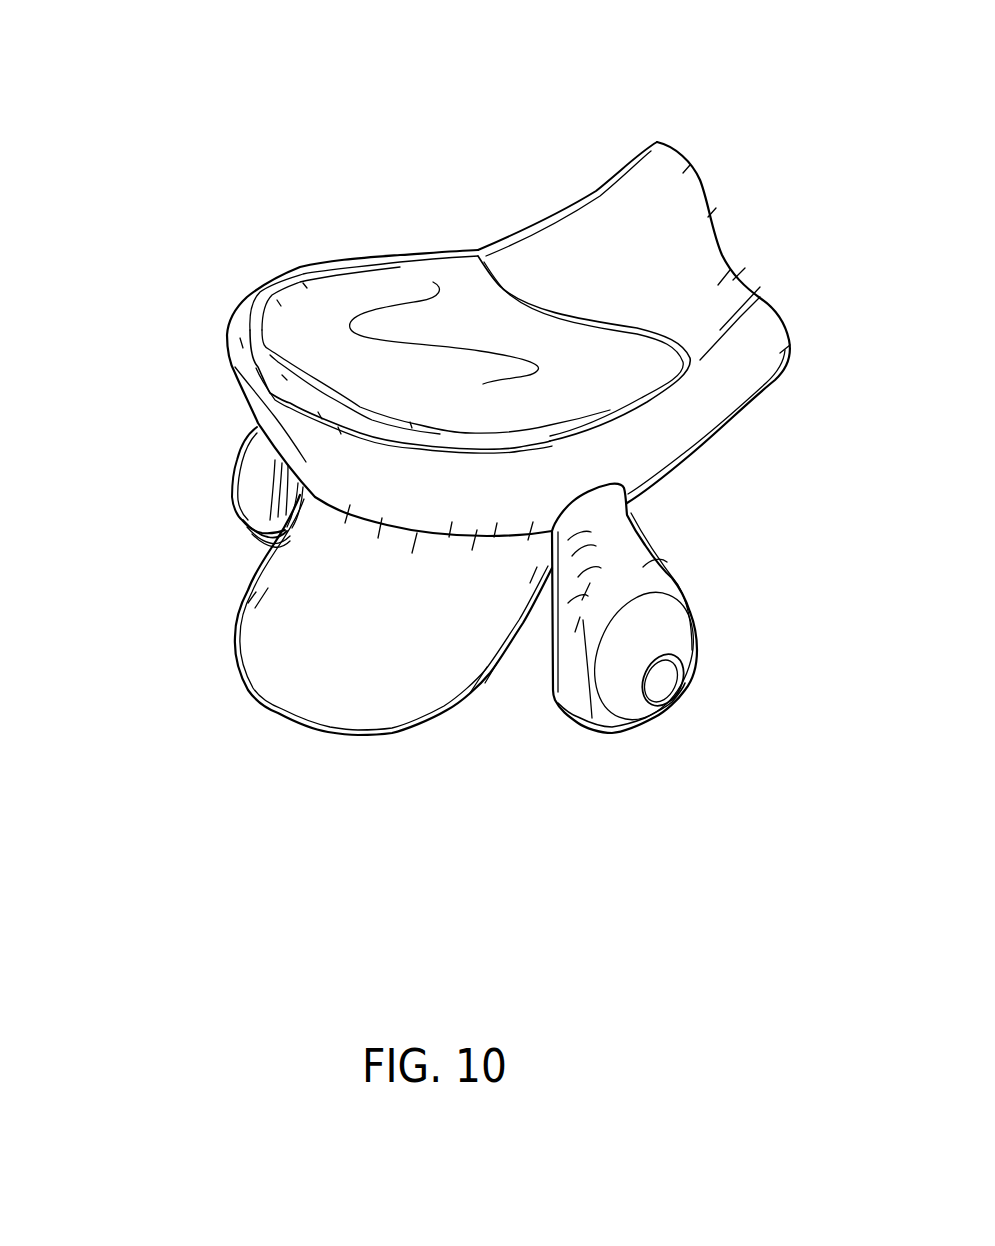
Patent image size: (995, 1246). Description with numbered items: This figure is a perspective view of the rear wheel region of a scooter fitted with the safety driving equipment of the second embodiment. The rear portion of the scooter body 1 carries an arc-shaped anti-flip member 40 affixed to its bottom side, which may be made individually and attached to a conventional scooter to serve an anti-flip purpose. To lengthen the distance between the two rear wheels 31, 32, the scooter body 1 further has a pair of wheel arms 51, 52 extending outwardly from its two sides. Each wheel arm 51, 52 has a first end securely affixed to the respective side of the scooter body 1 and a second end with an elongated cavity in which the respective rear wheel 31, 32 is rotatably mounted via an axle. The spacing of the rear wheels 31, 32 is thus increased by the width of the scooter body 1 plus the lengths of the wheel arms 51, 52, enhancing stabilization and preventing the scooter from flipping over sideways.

The scooter body 1 is at (598, 227).
The wheel arm 52 is at (247, 473).
The rear wheel 32 is at (252, 527).
The wheel arm 51 is at (623, 557).
The rear wheel 31 is at (585, 733).
The anti-flip member 40 is at (340, 663).